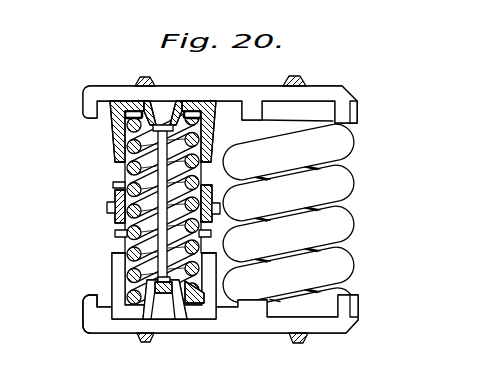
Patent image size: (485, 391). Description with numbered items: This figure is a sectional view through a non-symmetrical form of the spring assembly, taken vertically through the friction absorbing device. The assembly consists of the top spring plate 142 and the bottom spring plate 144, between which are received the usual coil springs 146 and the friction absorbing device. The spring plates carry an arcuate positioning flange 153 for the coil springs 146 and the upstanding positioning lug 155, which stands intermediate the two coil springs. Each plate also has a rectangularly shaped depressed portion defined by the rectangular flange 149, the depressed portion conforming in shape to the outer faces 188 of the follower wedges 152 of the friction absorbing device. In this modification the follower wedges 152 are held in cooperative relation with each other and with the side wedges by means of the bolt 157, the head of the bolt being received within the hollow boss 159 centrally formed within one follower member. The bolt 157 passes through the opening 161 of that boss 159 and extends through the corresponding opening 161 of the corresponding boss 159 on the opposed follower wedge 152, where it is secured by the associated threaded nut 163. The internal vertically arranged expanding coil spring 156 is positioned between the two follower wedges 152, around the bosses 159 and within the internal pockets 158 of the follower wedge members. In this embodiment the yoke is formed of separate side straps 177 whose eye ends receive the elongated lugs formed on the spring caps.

The top spring plate 142 is at (343, 88).
The bottom spring plate 144 is at (352, 330).
The coil springs 146 is at (351, 181).
The rectangular flange 149 is at (86, 308).
The follower wedges 152 is at (216, 100).
The arcuate positioning flange 153 is at (356, 115).
The upstanding positioning lug 155 is at (248, 106).
The internal expanding coil spring 156 is at (116, 235).
The bolt 157 is at (126, 169).
The internal pockets 158 is at (116, 160).
The hollow boss 159 is at (149, 104).
The opening 161 is at (167, 125).
The threaded nut 163 is at (165, 300).
The side straps 177 is at (109, 215).
The outer faces 188 is at (194, 324).